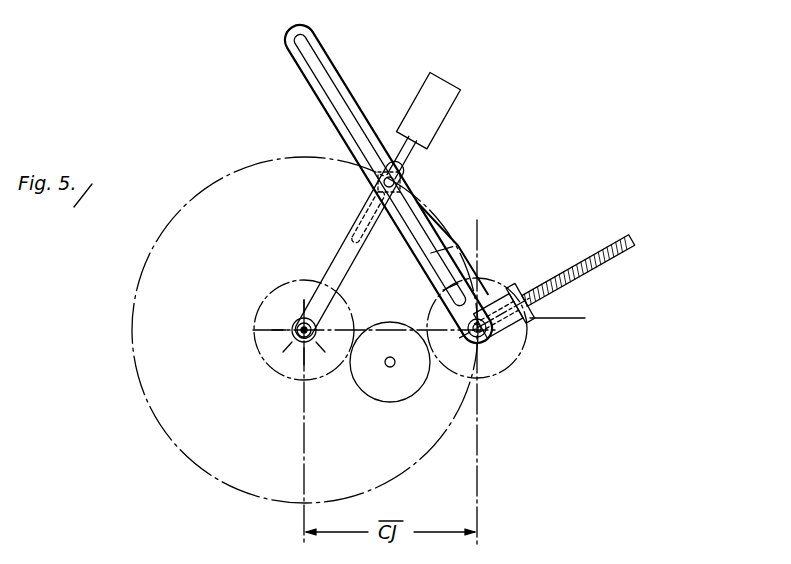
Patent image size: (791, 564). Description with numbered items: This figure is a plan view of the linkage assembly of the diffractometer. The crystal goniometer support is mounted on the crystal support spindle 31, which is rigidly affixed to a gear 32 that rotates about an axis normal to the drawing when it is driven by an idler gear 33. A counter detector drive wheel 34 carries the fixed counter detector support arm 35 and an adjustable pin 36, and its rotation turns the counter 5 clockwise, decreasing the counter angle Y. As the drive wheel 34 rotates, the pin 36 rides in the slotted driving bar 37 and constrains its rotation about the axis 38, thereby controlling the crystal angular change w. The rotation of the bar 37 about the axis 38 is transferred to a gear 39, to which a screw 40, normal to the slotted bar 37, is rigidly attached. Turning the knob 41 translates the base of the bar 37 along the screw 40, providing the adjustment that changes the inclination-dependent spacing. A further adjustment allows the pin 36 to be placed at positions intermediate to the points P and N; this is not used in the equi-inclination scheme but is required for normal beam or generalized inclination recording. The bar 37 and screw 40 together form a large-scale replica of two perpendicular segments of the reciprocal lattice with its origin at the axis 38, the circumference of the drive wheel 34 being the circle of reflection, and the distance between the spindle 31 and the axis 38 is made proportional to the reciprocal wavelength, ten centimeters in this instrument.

The counter 5 is at (458, 92).
The crystal support spindle 31 is at (292, 327).
The gear 32 is at (258, 349).
The idler gear 33 is at (412, 385).
The counter detector drive wheel 34 is at (212, 192).
The counter detector support arm 35 is at (412, 158).
The adjustable pin 36 is at (400, 180).
The slotted driving bar 37 is at (295, 61).
The axis 38 is at (489, 312).
The gear 39 is at (507, 355).
The screw 40 is at (637, 241).
The knob 41 is at (534, 317).
The point N is at (355, 229).
The point P is at (375, 166).
The counter angle Y is at (394, 326).
The crystal angular change w is at (475, 240).